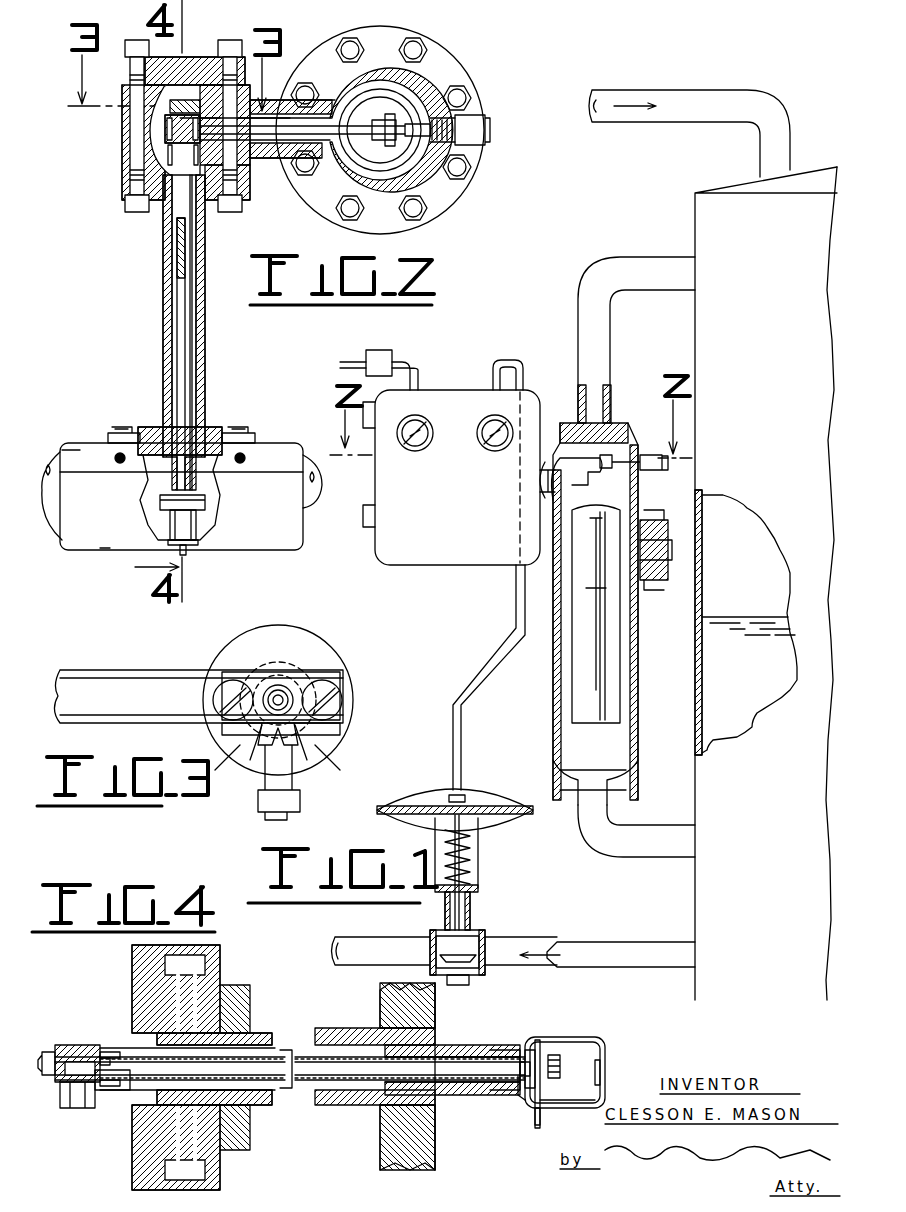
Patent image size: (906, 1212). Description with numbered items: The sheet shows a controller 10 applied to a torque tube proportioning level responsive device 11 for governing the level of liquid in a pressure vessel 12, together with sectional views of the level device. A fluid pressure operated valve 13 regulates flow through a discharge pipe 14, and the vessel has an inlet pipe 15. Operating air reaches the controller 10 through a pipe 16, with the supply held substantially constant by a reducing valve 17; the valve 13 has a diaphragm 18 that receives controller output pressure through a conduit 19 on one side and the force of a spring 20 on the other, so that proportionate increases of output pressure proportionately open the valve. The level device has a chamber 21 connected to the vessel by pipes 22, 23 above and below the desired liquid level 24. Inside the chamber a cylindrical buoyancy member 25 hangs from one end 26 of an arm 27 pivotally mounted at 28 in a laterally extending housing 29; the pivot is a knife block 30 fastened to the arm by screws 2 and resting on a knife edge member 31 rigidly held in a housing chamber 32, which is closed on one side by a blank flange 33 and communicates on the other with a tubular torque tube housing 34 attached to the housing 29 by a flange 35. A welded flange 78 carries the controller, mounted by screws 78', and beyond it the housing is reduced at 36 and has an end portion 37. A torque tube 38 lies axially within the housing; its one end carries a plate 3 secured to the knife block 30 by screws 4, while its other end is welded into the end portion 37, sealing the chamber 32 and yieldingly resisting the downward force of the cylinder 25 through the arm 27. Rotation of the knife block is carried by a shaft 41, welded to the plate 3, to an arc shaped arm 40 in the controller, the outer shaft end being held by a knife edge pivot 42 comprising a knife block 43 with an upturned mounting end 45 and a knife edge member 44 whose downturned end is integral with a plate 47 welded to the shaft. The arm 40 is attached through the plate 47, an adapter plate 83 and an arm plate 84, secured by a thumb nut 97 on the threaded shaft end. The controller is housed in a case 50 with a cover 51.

In FIG. 2, the screws 2 is at (172, 112).
In FIG. 3, the screws 2 is at (225, 690).
In FIG. 4, the screws 2 is at (46, 1052).
In FIG. 2, the plate 3 is at (210, 140).
In FIG. 4, the plate 3 is at (110, 1053).
In FIG. 2, the screws 4 is at (168, 150).
In FIG. 4, the screws 4 is at (115, 1052).
In FIG. 1, the controller 10 is at (405, 558).
In FIG. 2, the controller 10 is at (78, 540).
In FIG. 1, the proportioning level responsive device 11 is at (522, 748).
In FIG. 2, the proportioning level responsive device 11 is at (440, 82).
In FIG. 1, the pressure vessel 12 is at (713, 228).
In FIG. 1, the fluid pressure operated valve 13 is at (497, 940).
In FIG. 1, the discharge pipe 14 is at (610, 950).
In FIG. 1, the inlet pipe 15 is at (688, 95).
In FIG. 1, the pipe 16 is at (405, 362).
In FIG. 2, the pipe 16 is at (118, 452).
In FIG. 1, the reducing valve 17 is at (373, 355).
In FIG. 1, the diaphragm 18 is at (433, 808).
In FIG. 1, the conduit 19 is at (506, 358).
In FIG. 2, the conduit 19 is at (245, 455).
In FIG. 1, the spring 20 is at (472, 866).
In FIG. 1, the chamber 21 is at (622, 610).
In FIG. 2, the chamber 21 is at (345, 105).
In FIG. 1, the pipe 22 is at (600, 268).
In FIG. 1, the pipe 23 is at (660, 848).
In FIG. 1, the liquid level 24 is at (735, 615).
In FIG. 1, the cylindrical buoyancy member 25 is at (578, 688).
In FIG. 2, the cylindrical buoyancy member 25 is at (410, 135).
In FIG. 1, the end of arm 26 is at (615, 462).
In FIG. 2, the end of arm 26 is at (447, 160).
In FIG. 1, the arm 27 is at (548, 455).
In FIG. 2, the arm 27 is at (306, 135).
In FIG. 3, the arm 27 is at (112, 672).
In FIG. 4, the arm 27 is at (62, 1045).
In FIG. 2, the pivotal mounting 28 is at (154, 130).
In FIG. 3, the pivotal mounting 28 is at (290, 688).
In FIG. 4, the pivotal mounting 28 is at (100, 1090).
In FIG. 2, the laterally extending housing 29 is at (272, 103).
In FIG. 4, the laterally extending housing 29 is at (140, 1165).
In FIG. 2, the knife block 30 is at (165, 135).
In FIG. 3, the knife block 30 is at (275, 685).
In FIG. 4, the knife block 30 is at (72, 1060).
In FIG. 3, the knife edge member 31 is at (320, 742).
In FIG. 4, the knife edge member 31 is at (55, 1092).
In FIG. 2, the housing chamber 32 is at (160, 100).
In FIG. 4, the housing chamber 32 is at (155, 1033).
In FIG. 2, the blank flange 33 is at (200, 58).
In FIG. 2, the torque tube housing 34 is at (162, 326).
In FIG. 3, the torque tube housing 34 is at (238, 648).
In FIG. 4, the torque tube housing 34 is at (322, 1095).
In FIG. 2, the flange 35 is at (122, 190).
In FIG. 4, the flange 35 is at (222, 958).
In FIG. 2, the reduced portion 36 is at (200, 468).
In FIG. 4, the reduced portion 36 is at (455, 1095).
In FIG. 2, the end portion 37 is at (172, 478).
In FIG. 4, the end portion 37 is at (505, 1050).
In FIG. 2, the torque tube 38 is at (185, 295).
In FIG. 3, the torque tube 38 is at (282, 690).
In FIG. 4, the torque tube 38 is at (135, 1055).
In FIG. 2, the arm 40 is at (160, 503).
In FIG. 4, the arm 40 is at (535, 1120).
In FIG. 2, the shaft 41 is at (178, 238).
In FIG. 4, the shaft 41 is at (292, 1085).
In FIG. 2, the knife edge pivot 42 is at (185, 548).
In FIG. 4, the knife edge pivot 42 is at (602, 1072).
In FIG. 2, the knife block 43 is at (170, 530).
In FIG. 4, the knife block 43 is at (560, 1102).
In FIG. 2, the knife edge member 44 is at (186, 520).
In FIG. 4, the knife edge member 44 is at (598, 1040).
In FIG. 4, the upturned mounting end 45 is at (520, 1062).
In FIG. 4, the plate 47 is at (512, 1090).
In FIG. 2, the case 50 is at (80, 450).
In FIG. 4, the case 50 is at (437, 1150).
In FIG. 1, the cover 51 is at (468, 548).
In FIG. 2, the cover 51 is at (108, 548).
In FIG. 2, the flange 78 is at (176, 417).
In FIG. 4, the flange 78 is at (386, 1074).
In FIG. 2, the screws 78' is at (258, 409).
In FIG. 4, the adapter plate 83 is at (532, 1048).
In FIG. 4, the arm plate 84 is at (540, 1052).
In FIG. 4, the thumb nut 97 is at (560, 1058).